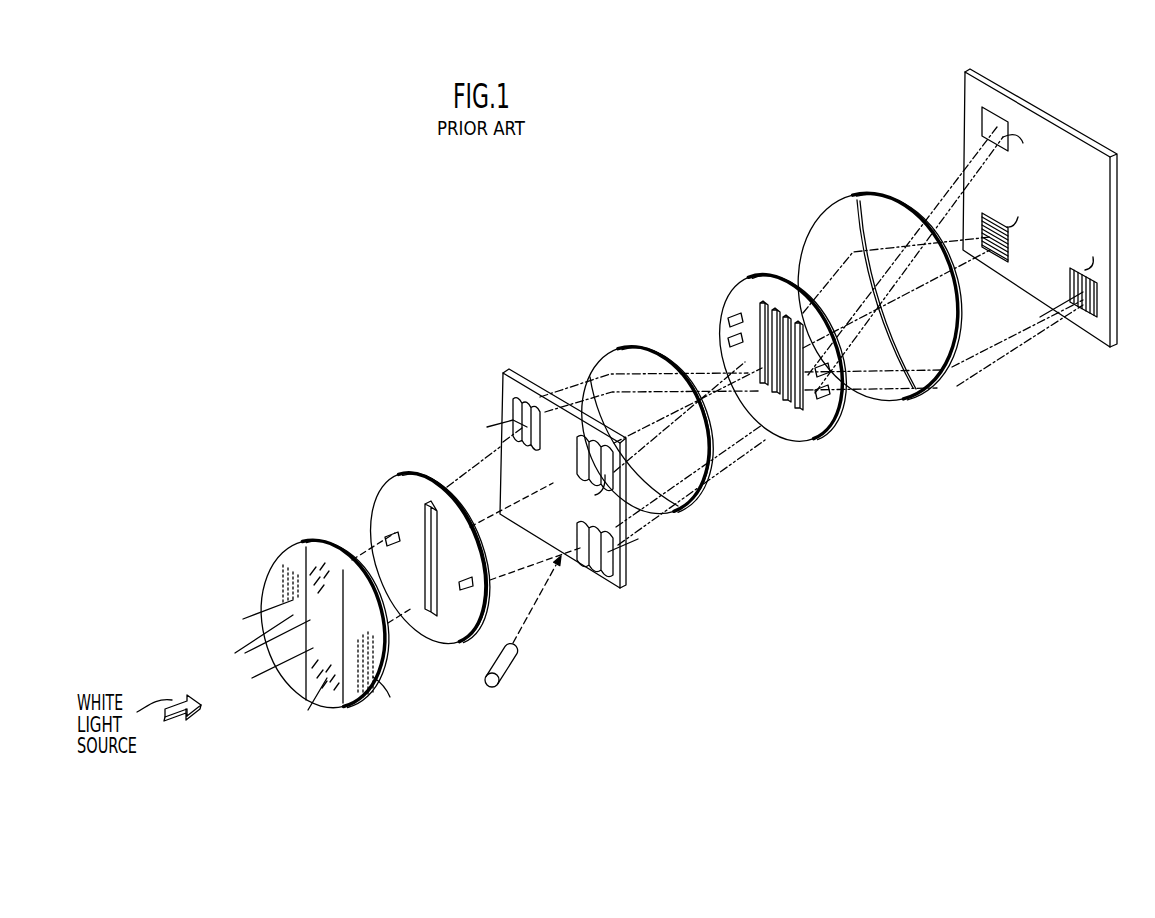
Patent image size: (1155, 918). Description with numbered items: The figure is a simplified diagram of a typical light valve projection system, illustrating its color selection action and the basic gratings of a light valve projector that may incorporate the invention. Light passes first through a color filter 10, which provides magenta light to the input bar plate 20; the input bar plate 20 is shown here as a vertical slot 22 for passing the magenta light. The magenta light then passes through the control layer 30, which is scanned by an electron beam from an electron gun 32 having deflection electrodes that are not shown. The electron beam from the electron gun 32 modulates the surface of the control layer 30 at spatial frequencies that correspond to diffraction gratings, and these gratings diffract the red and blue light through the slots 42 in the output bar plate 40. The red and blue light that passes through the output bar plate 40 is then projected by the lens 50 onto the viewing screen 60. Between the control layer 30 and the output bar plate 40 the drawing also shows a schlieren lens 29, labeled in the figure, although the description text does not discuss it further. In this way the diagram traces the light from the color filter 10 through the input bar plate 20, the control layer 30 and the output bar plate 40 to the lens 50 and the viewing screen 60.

The color filter 10 is at (275, 557).
The input bar plate 20 is at (398, 557).
The vertical slot 22 is at (437, 613).
The schlieren lens 29 is at (650, 352).
The control layer 30 is at (500, 380).
The electron gun 32 is at (513, 667).
The output bar plate 40 is at (829, 364).
The slots 42 is at (800, 412).
The lens 50 is at (833, 213).
The viewing screen 60 is at (1035, 110).